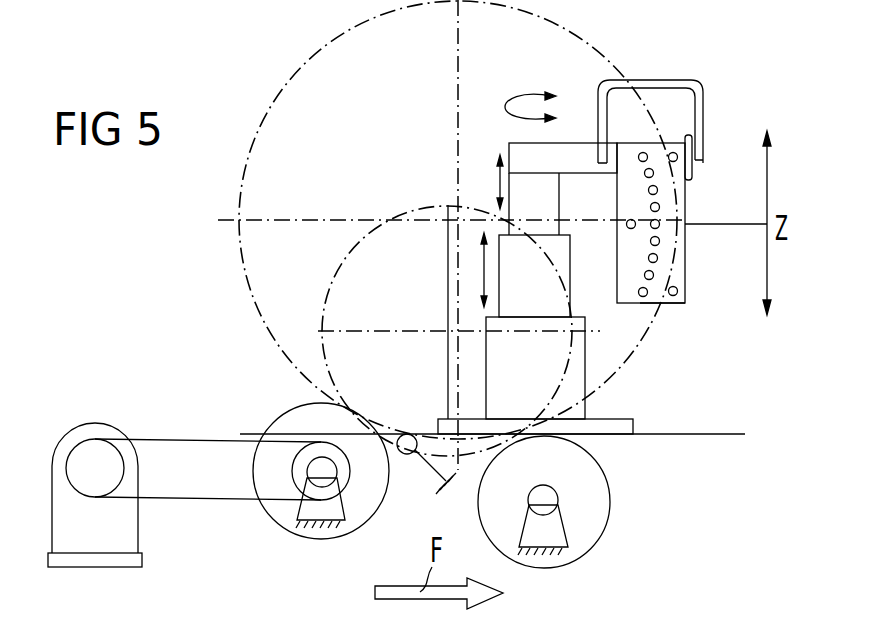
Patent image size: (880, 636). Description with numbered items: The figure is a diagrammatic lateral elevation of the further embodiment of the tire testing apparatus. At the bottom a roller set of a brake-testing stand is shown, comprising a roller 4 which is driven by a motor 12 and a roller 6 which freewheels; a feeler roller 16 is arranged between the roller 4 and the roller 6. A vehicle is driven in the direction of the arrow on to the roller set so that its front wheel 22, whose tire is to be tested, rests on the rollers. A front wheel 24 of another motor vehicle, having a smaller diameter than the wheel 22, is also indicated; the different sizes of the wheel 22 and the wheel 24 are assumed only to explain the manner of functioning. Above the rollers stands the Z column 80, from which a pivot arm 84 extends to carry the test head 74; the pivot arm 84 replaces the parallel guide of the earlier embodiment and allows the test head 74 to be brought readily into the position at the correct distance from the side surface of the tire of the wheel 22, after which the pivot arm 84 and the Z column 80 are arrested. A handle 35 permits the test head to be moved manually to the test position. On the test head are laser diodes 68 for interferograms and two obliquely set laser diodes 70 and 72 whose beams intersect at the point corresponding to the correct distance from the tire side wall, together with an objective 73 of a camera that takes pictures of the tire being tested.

The roller 4 is at (278, 512).
The roller 6 is at (601, 521).
The motor 12 is at (85, 455).
The feeler roller 16 is at (409, 456).
The front wheel 22 is at (287, 106).
The front wheel 24 is at (360, 264).
The handle 35 is at (672, 80).
The laser diodes 68 is at (687, 230).
The laser diode 70 is at (673, 157).
The laser diode 72 is at (678, 291).
The objective 73 is at (631, 228).
The test head 74 is at (660, 302).
The Z column 80 is at (587, 380).
The pivot arm 84 is at (568, 158).